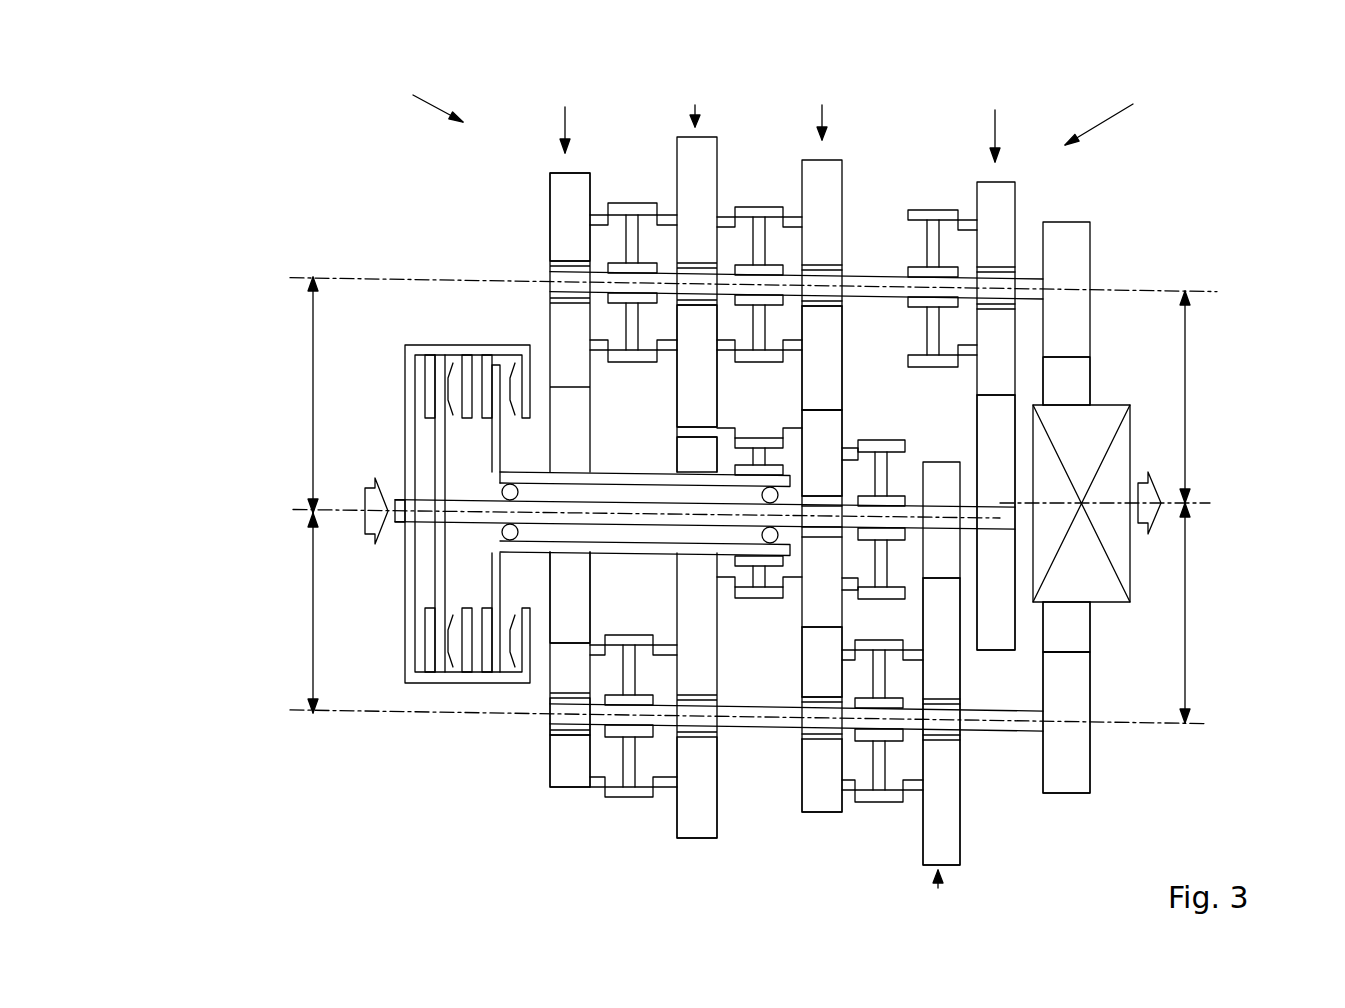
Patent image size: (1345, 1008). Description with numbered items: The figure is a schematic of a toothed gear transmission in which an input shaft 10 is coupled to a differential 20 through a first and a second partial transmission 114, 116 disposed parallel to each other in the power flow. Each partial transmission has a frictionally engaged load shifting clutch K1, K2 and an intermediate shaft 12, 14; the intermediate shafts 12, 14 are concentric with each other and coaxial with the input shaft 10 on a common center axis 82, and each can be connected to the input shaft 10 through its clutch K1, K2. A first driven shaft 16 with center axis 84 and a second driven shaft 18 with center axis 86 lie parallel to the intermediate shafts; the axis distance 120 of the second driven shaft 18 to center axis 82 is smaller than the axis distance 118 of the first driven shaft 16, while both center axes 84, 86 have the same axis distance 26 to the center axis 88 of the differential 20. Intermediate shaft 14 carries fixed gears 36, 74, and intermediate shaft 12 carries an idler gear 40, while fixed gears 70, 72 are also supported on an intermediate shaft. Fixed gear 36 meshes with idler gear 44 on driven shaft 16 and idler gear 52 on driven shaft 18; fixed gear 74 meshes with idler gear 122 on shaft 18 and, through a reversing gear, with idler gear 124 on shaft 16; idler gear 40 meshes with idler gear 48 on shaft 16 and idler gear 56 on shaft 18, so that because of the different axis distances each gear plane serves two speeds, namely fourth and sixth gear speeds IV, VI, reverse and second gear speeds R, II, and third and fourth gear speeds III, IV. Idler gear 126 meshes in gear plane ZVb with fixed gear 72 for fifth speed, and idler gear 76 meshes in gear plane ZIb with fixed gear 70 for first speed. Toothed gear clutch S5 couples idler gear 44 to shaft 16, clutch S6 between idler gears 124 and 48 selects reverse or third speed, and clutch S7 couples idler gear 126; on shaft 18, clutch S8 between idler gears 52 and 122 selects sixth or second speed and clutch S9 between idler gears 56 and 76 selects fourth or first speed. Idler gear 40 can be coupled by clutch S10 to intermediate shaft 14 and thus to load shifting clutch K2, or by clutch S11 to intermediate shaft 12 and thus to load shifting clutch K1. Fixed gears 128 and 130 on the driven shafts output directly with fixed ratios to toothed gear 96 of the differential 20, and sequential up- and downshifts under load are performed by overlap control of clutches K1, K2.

The input shaft 10 is at (395, 505).
The intermediate shaft 12 is at (488, 518).
The intermediate shaft 14 is at (560, 548).
The first driven shaft 16 is at (1045, 278).
The second driven shaft 18 is at (1023, 730).
The differential gear 20 is at (1122, 457).
The axis distance 26 is at (1190, 445).
The fixed gear 36 is at (562, 625).
The idler gear 40 is at (823, 433).
The idler gear 44 is at (550, 187).
The idler gear 48 is at (828, 358).
The idler gear 52 is at (560, 768).
The idler gear 56 is at (818, 793).
The fixed gear 70 is at (1000, 445).
The fixed gear 72 is at (950, 488).
The fixed gear 74 is at (692, 458).
The idler gear 76 is at (951, 764).
The center axis 82 is at (300, 513).
The center axis 84 is at (438, 280).
The center axis 86 is at (560, 590).
The center axis 88 is at (1195, 508).
The toothed gear 96 is at (1082, 397).
The first partial transmission 114 is at (1106, 109).
The second partial transmission 116 is at (412, 93).
The axis distance 118 is at (312, 417).
The axis distance 120 is at (310, 582).
The idler gear 122 is at (700, 822).
The idler gear 124 is at (692, 365).
The idler gear 126 is at (1000, 230).
The fixed gear 128 is at (1082, 323).
The fixed gear 130 is at (1072, 703).
The load shifting clutch K1 is at (442, 362).
The load shifting clutch K2 is at (497, 362).
The toothed gear clutch S5 is at (637, 208).
The toothed gear clutch S6 is at (757, 210).
The toothed gear clutch S7 is at (933, 217).
The toothed gear clutch S8 is at (618, 790).
The toothed gear clutch S9 is at (887, 795).
The toothed gear clutch S10 is at (757, 600).
The toothed wheel clutch S11 is at (885, 447).
The reverse gear speed R is at (717, 383).
The second gear speed II is at (679, 838).
The third gear speed III is at (842, 198).
The fourth gear speed IV is at (558, 215).
The sixth gear speed VI is at (558, 787).
The toothed gear plane ZVb is at (995, 118).
The toothed gear plane ZIb is at (942, 896).